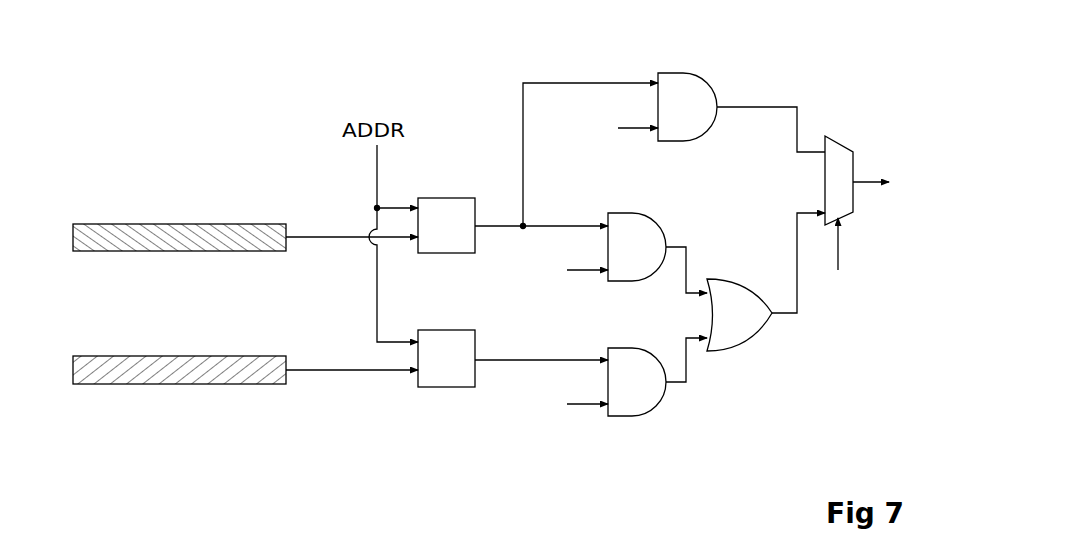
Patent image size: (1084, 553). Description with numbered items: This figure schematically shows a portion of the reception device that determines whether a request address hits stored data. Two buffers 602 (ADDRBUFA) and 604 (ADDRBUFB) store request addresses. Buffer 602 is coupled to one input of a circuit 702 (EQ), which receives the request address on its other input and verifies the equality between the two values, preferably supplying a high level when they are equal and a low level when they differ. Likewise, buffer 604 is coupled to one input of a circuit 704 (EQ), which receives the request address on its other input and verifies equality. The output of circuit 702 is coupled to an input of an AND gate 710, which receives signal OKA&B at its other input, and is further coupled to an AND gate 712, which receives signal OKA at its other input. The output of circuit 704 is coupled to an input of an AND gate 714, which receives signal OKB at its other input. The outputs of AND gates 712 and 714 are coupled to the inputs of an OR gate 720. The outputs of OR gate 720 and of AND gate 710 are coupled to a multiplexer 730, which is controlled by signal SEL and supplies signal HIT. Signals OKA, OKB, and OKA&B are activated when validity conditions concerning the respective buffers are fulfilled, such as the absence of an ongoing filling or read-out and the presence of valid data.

The buffer 602 is at (248, 232).
The buffer 604 is at (270, 378).
The circuit 702 is at (453, 199).
The circuit 704 is at (453, 331).
The AND gate 710 is at (671, 80).
The AND gate 712 is at (622, 222).
The AND gate 714 is at (634, 401).
The OR gate 720 is at (740, 332).
The multiplexer 730 is at (830, 141).